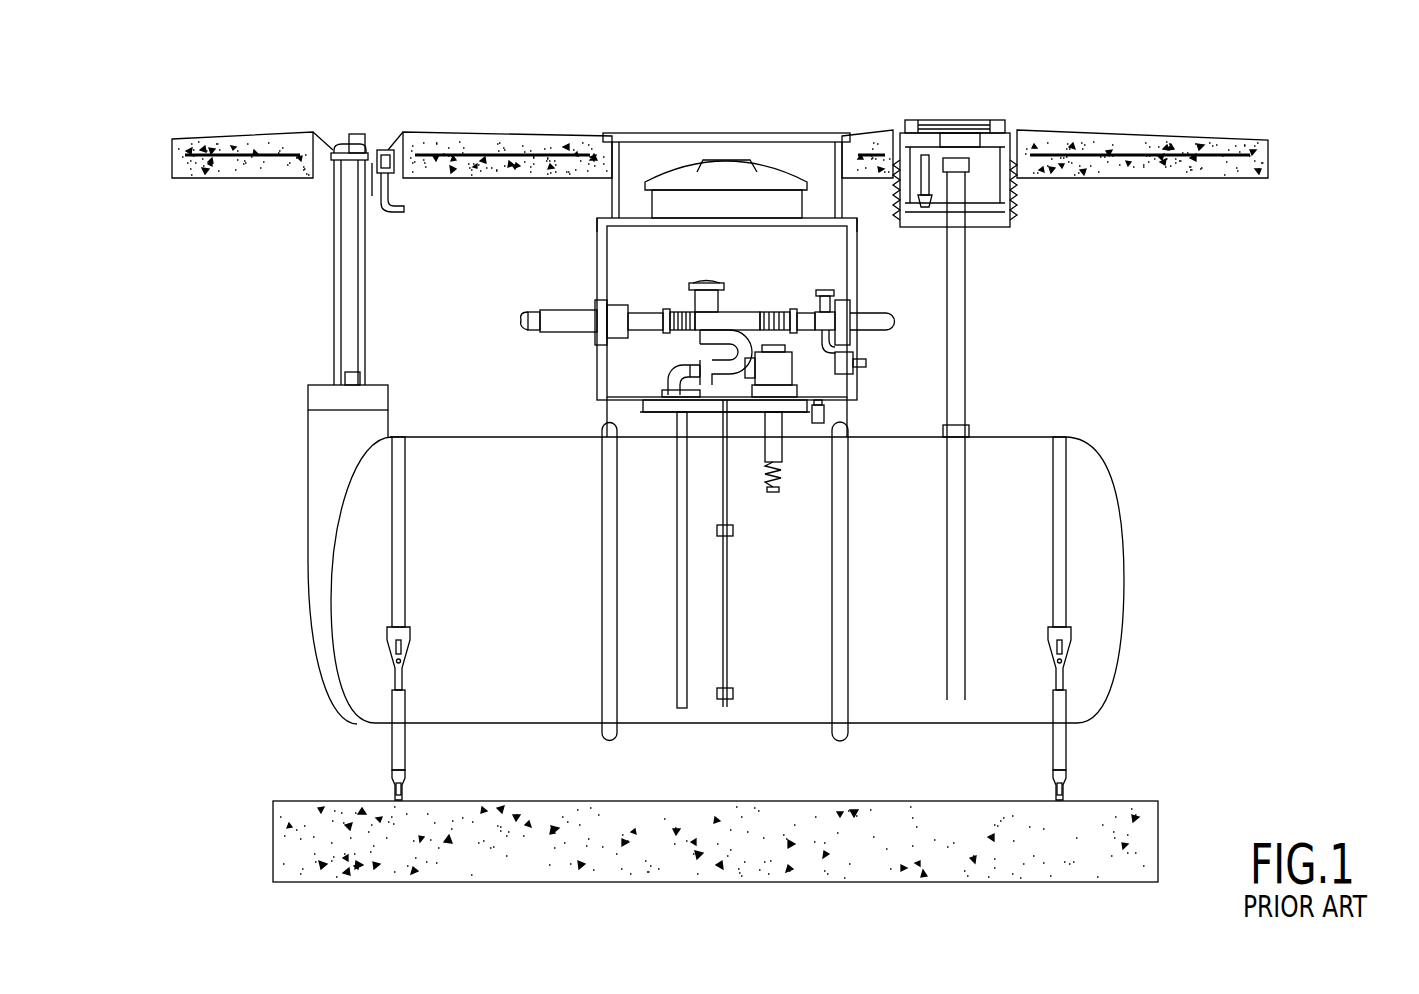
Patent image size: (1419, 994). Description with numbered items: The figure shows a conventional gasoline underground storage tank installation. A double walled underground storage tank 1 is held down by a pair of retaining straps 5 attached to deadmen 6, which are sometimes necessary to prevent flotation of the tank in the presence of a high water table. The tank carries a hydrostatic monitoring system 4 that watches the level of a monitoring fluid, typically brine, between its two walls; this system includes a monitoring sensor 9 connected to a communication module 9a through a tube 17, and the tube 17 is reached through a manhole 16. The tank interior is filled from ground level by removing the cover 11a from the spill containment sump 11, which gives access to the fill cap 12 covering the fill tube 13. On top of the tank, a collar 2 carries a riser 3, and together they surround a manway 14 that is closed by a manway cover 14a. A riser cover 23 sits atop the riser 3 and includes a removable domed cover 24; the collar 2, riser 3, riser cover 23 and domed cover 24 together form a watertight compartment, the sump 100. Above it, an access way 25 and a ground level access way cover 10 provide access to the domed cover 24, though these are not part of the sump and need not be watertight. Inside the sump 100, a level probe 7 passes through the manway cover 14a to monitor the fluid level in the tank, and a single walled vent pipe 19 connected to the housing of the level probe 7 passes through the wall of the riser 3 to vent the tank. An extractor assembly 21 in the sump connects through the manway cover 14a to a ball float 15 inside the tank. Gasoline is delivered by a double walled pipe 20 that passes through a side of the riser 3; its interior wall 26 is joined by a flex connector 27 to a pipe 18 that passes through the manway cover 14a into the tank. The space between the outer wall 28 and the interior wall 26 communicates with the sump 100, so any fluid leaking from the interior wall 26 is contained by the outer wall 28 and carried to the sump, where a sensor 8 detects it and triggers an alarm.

The double walled underground storage tank 1 is at (1122, 506).
The collar 2 is at (859, 418).
The riser 3 is at (859, 384).
The hydrostatic monitoring system 4 is at (306, 432).
The retaining straps 5 is at (1074, 608).
The deadmen 6 is at (1116, 800).
The level probe 7 is at (700, 283).
The sensor 8 is at (818, 427).
The monitoring sensor 9 is at (340, 397).
The communication module 9a is at (387, 150).
The access way cover 10 is at (673, 130).
The spill containment sump 11 is at (955, 118).
The cover 11a is at (982, 120).
The fill cap 12 is at (935, 158).
The fill tube 13 is at (978, 172).
The manway 14 is at (653, 430).
The manway cover 14a is at (645, 413).
The ball float 15 is at (772, 494).
The manhole 16 is at (360, 128).
The tube 17 is at (335, 150).
The pipe 18 is at (672, 543).
The single walled vent pipe 19 is at (883, 304).
The double walled pipe 20 is at (567, 305).
The extractor assembly 21 is at (762, 340).
The riser cover 23 is at (823, 214).
The domed cover 24 is at (672, 166).
The access way 25 is at (600, 194).
The interior wall 26 is at (527, 312).
The flex connector 27 is at (700, 310).
The outer wall 28 is at (578, 340).
The sump 100 is at (840, 260).